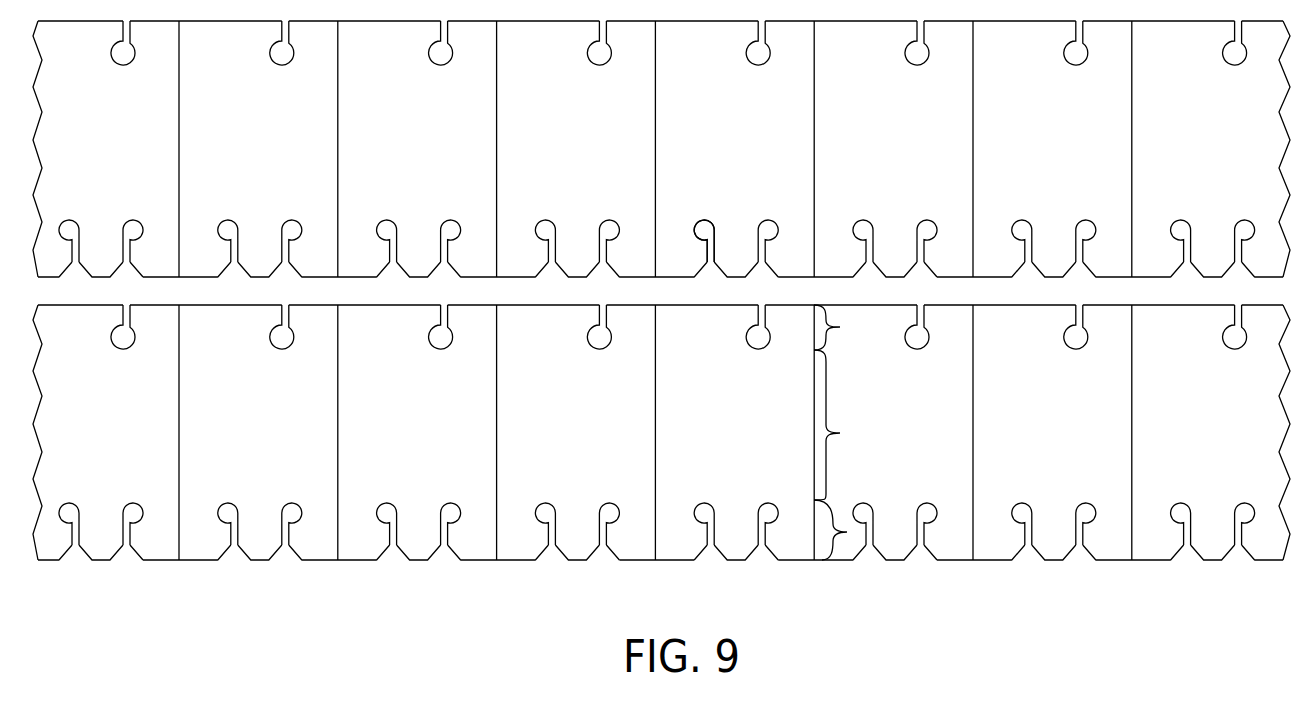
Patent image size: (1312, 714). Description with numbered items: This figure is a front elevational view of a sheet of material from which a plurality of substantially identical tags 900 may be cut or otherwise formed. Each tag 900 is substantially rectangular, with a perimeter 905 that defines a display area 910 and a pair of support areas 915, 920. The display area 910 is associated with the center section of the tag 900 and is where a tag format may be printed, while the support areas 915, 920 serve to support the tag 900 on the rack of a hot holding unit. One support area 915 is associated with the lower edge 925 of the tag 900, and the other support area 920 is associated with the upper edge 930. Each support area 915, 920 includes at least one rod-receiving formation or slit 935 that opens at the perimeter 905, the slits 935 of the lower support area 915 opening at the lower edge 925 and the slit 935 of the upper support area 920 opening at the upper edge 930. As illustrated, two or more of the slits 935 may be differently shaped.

The tag 900 is at (760, 444).
The perimeter 905 is at (655, 428).
The display area 910 is at (860, 425).
The support area 915 is at (850, 534).
The support area 920 is at (857, 327).
The lower edge 925 is at (673, 560).
The upper edge 930 is at (700, 305).
The rod-receiving formation or slit 935 is at (707, 548).